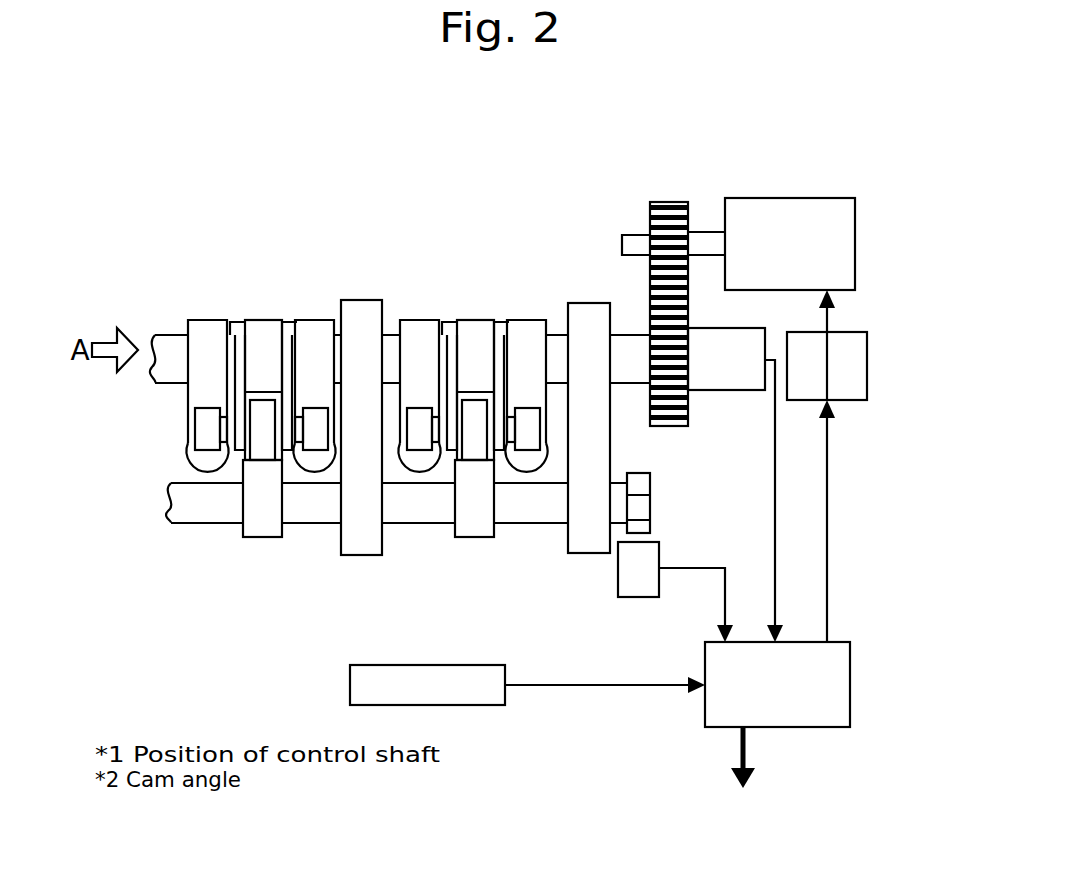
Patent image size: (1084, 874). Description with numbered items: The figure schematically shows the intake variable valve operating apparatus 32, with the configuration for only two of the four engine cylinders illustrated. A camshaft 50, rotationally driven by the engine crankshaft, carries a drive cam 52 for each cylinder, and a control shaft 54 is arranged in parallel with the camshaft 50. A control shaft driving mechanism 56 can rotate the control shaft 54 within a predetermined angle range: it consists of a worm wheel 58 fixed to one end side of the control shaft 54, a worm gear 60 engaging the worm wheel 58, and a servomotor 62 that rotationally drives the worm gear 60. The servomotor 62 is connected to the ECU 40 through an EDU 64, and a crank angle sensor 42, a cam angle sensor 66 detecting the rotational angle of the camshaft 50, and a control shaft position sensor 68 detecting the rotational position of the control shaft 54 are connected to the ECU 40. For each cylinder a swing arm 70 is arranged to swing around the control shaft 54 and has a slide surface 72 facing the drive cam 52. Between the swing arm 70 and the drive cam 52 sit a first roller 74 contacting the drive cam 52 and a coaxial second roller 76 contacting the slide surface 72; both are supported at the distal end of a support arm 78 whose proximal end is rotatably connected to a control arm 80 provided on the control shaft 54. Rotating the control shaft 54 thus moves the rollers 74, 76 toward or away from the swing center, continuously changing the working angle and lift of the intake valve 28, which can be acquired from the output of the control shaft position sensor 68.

The intake valve 28 is at (204, 478).
The intake variable valve operating apparatus 32 is at (358, 229).
The ECU 40 is at (855, 688).
The crank angle sensor 42 is at (350, 688).
The camshaft 50 is at (185, 524).
The drive cam 52 is at (261, 537).
The control shaft 54 is at (638, 334).
The control shaft driving mechanism 56 is at (360, 556).
The worm wheel 58 is at (689, 308).
The worm gear 60 is at (650, 217).
The servomotor 62 is at (829, 197).
The EDU (Electrical Driver Unit) 64 is at (868, 368).
The cam angle sensor 66 is at (660, 555).
The control shaft position sensor 68 is at (728, 391).
The swing arm 70 is at (207, 335).
The slide surface 72 is at (312, 395).
The first roller 74 is at (264, 432).
The second roller 76 is at (205, 420).
The support arm 78 is at (237, 329).
The control arm 80 is at (264, 336).